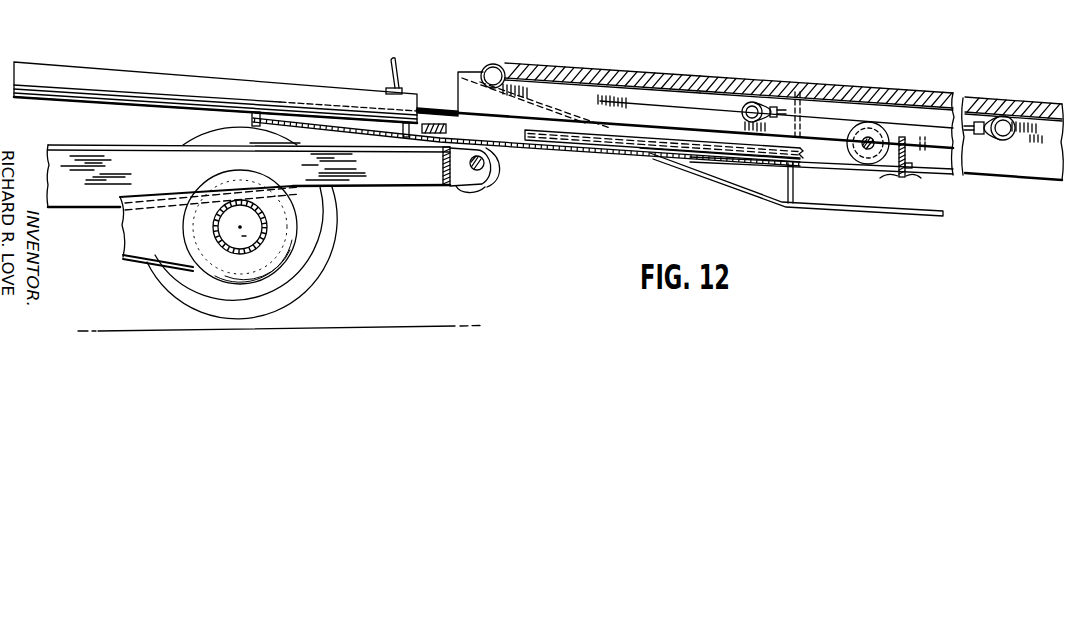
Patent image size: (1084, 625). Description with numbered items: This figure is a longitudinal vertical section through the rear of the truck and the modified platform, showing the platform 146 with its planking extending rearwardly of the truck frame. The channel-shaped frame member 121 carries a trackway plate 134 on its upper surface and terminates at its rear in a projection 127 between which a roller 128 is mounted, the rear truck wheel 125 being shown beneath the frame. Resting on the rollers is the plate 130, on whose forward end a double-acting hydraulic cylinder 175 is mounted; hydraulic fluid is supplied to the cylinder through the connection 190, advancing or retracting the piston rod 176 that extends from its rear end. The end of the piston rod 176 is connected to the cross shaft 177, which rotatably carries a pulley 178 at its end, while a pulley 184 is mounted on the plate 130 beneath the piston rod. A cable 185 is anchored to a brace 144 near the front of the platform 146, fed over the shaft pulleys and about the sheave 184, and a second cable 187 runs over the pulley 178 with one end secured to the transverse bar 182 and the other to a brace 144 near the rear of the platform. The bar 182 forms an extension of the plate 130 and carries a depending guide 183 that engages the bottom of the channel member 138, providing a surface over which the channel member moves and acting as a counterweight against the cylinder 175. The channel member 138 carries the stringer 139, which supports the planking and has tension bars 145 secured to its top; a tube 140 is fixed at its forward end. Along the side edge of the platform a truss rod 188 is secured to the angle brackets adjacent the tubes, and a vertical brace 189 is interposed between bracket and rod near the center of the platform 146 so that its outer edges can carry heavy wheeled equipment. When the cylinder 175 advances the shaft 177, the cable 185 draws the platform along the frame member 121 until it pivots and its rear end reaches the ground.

The double-acting hydraulic cylinder 175 is at (140, 78).
The connection 190 is at (392, 78).
The piston rod 176 is at (418, 100).
The pulley 184 is at (440, 123).
The plate 134 is at (110, 143).
The frame member 121 is at (368, 185).
The rear truck wheel 125 is at (320, 242).
The projection 127 is at (458, 178).
The roller 128 is at (485, 187).
The tube 140 is at (499, 64).
The platform 146 is at (616, 71).
The stringer 139 is at (673, 94).
The tension bar 145 is at (755, 85).
The cable 185 is at (509, 137).
The brace 144 is at (741, 112).
The cable 187 is at (984, 121).
The cross shaft 177 is at (868, 142).
The transverse bar 182 is at (908, 145).
The pulley 178 is at (855, 163).
The guide 183 is at (910, 180).
The vertical brace 189 is at (790, 185).
The truss rod 188 is at (735, 180).
The channel member 138 is at (690, 157).
The plate 130 is at (572, 147).